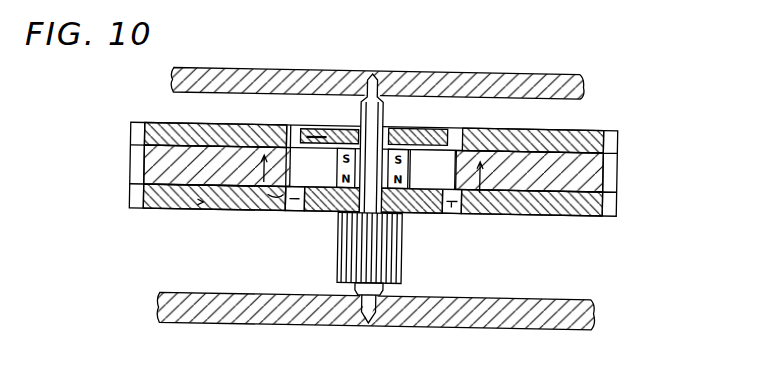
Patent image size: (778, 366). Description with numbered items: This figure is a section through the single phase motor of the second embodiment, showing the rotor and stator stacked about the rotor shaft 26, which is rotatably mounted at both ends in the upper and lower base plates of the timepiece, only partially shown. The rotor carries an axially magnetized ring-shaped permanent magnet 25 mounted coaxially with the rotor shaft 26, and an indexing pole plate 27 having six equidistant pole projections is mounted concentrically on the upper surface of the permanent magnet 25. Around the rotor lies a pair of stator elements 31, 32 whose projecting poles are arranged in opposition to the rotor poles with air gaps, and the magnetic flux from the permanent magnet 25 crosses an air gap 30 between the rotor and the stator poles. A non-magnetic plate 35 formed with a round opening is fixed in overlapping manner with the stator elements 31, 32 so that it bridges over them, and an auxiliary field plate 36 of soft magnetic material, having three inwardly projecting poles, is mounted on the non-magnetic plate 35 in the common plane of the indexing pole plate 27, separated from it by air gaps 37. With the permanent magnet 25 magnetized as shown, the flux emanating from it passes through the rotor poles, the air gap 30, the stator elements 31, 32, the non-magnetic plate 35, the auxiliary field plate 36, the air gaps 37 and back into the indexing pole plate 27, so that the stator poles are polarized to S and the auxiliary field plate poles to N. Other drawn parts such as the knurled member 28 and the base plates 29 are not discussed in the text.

The ring-shaped permanent magnet 25 is at (433, 170).
The rotor shaft 26 is at (371, 138).
The indexing pole plate 27 is at (347, 135).
The knurled cylinder 28 is at (403, 259).
The support plate 29 is at (570, 82).
The air gap 30 is at (296, 211).
The stator element 31 is at (246, 206).
The stator element 32 is at (590, 207).
The non-magnetic plate 35 is at (592, 173).
The auxiliary field plate 36 is at (583, 138).
The air gap 37 is at (291, 137).